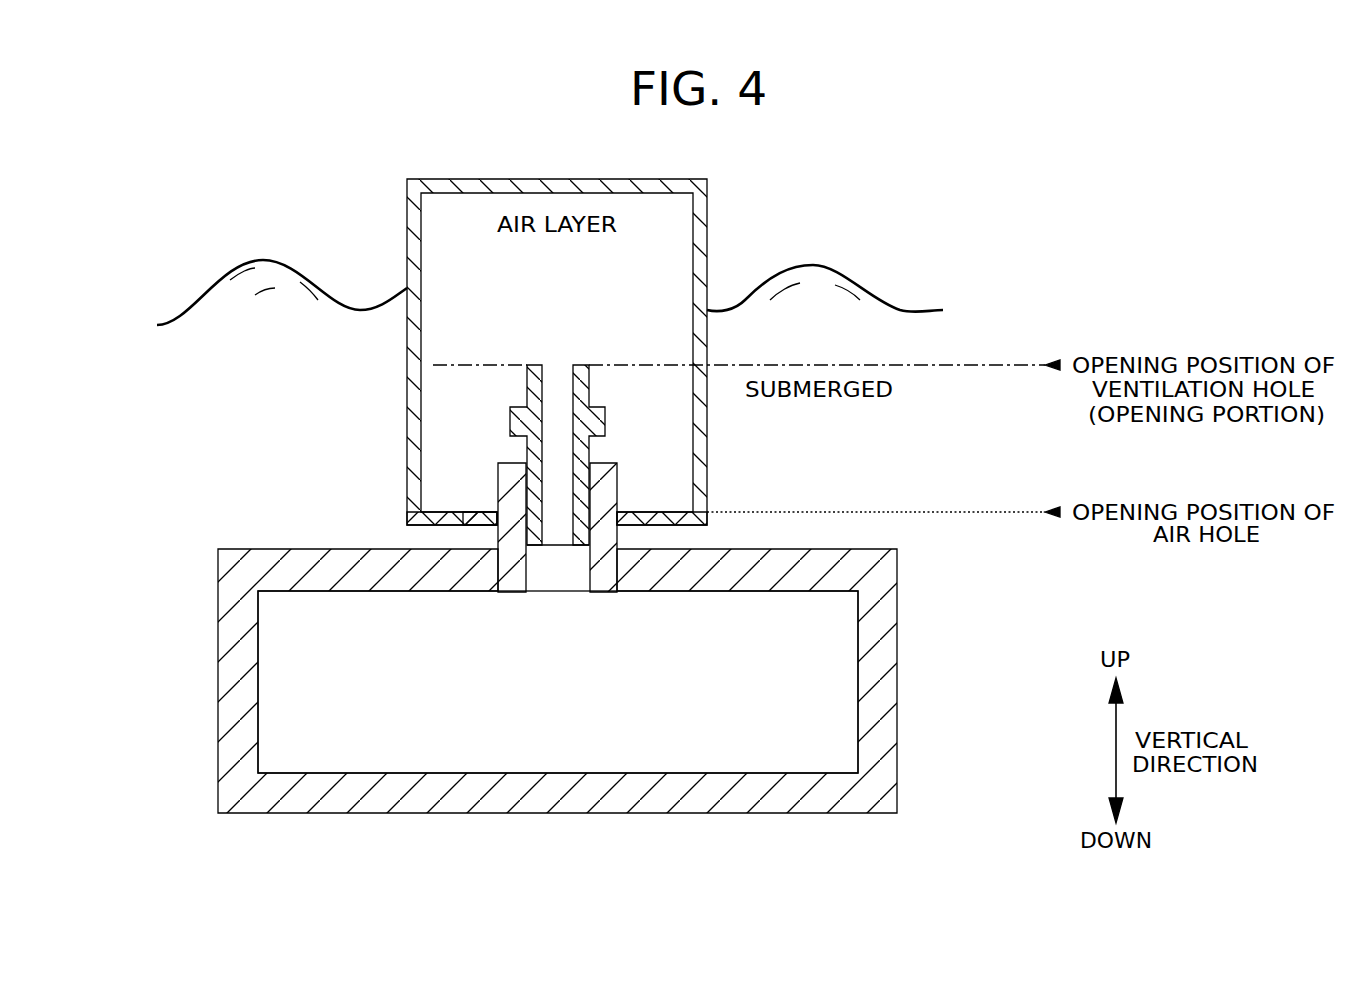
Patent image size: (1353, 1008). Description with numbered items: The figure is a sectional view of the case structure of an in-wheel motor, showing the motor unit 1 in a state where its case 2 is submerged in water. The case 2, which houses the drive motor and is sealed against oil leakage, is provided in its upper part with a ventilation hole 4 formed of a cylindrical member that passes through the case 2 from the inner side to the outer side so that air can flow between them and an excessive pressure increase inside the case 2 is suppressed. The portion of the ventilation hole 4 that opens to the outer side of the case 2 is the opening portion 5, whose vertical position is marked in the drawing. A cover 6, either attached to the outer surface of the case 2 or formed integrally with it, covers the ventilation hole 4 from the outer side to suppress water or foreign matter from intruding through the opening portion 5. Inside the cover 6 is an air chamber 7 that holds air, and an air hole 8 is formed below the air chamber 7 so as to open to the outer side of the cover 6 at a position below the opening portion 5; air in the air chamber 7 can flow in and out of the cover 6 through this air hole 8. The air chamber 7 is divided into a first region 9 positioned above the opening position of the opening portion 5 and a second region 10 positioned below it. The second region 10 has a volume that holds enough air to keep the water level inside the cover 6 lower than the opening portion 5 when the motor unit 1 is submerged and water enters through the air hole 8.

The motor unit 1 is at (153, 768).
The case 2 is at (877, 744).
The ventilation hole 4 is at (530, 450).
The opening portion 5 is at (560, 365).
The cover 6 is at (700, 243).
The air chamber 7 is at (100, 335).
The air hole 8 is at (403, 525).
The first region 9 is at (455, 337).
The second region 10 is at (450, 398).